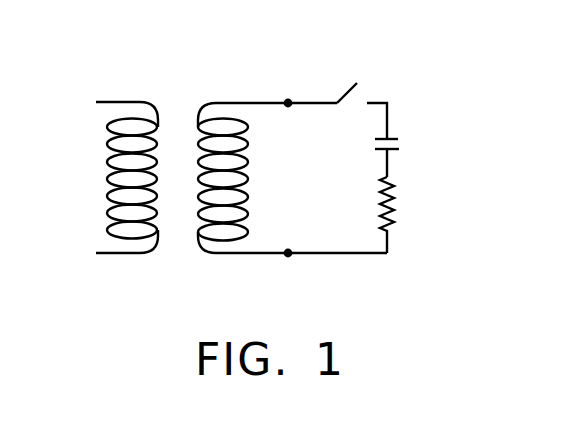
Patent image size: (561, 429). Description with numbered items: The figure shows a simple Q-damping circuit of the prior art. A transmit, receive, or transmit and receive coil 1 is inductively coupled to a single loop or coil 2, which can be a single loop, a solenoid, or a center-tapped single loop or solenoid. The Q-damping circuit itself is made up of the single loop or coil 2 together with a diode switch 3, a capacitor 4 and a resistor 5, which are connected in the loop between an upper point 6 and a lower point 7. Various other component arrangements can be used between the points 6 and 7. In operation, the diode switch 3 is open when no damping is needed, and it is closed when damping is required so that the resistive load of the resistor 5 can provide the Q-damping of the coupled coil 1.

The coil 1 is at (108, 163).
The single loop or coil 2 is at (217, 102).
The diode switch 3 is at (347, 88).
The capacitor 4 is at (398, 137).
The resistor 5 is at (393, 200).
The point 6 is at (288, 100).
The point 7 is at (289, 255).